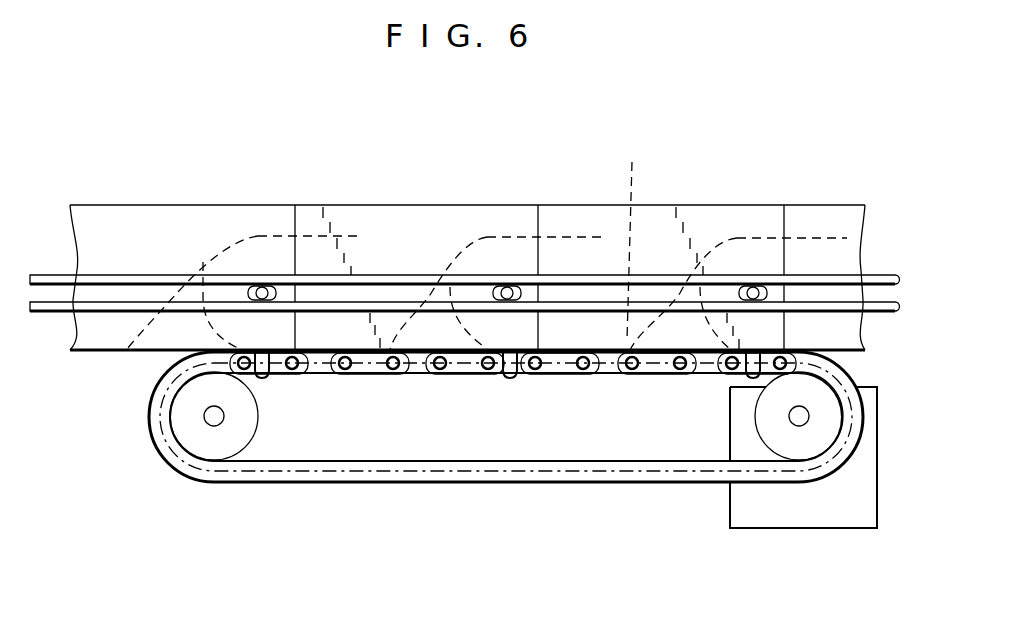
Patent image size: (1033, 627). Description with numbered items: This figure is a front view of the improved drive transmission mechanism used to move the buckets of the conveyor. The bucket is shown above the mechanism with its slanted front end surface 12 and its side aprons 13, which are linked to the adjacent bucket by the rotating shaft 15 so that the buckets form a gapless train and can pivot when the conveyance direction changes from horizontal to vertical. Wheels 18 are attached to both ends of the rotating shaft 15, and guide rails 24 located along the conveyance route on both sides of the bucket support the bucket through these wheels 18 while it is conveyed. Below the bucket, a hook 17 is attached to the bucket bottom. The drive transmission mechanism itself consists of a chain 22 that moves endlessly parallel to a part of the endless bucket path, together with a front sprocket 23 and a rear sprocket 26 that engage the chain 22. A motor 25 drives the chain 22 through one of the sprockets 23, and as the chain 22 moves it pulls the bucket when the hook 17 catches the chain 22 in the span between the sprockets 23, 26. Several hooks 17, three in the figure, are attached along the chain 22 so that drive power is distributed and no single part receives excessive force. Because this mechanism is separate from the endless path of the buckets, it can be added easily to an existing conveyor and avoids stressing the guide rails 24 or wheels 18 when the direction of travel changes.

The front end surface 12 is at (487, 242).
The aprons 13 is at (363, 217).
The rotating shaft 15 is at (260, 287).
The hook 17 is at (509, 380).
The wheels 18 is at (480, 287).
The chain 22 is at (323, 477).
The sprocket 23 is at (762, 417).
The guide rails 24 is at (732, 280).
The motor 25 is at (807, 520).
The sprocket 26 is at (252, 412).